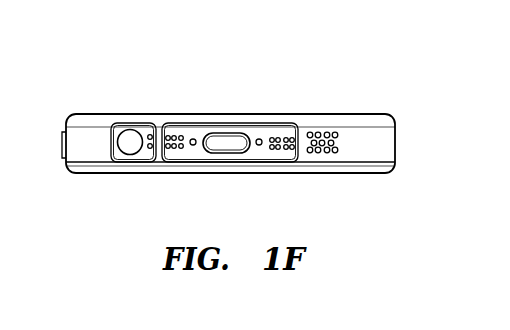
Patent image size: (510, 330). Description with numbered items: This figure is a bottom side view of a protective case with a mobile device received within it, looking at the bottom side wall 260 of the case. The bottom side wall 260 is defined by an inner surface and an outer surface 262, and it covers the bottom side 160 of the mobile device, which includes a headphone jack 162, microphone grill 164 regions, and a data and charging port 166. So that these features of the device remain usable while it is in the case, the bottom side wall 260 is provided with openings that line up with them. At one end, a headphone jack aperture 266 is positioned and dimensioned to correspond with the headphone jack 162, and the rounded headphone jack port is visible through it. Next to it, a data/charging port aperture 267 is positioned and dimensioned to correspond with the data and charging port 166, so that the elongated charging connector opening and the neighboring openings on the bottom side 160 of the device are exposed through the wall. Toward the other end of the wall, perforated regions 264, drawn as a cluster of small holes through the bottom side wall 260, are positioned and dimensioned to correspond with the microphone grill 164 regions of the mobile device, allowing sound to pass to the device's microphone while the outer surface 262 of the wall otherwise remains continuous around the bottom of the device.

The bottom side wall 260 is at (85, 144).
The headphone jack aperture 266 is at (142, 130).
The headphone jack 162 is at (124, 150).
The data and charging port 166 is at (223, 141).
The bottom side 160 is at (196, 150).
The data/charging port aperture 267 is at (238, 131).
The microphone grill 164 is at (283, 133).
The perforated regions 264 is at (328, 134).
The outer surface 262 is at (345, 153).